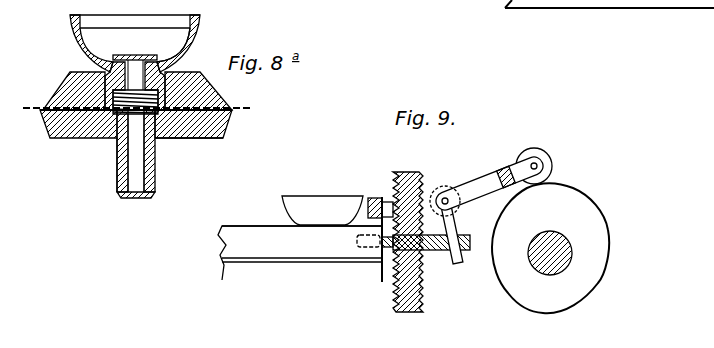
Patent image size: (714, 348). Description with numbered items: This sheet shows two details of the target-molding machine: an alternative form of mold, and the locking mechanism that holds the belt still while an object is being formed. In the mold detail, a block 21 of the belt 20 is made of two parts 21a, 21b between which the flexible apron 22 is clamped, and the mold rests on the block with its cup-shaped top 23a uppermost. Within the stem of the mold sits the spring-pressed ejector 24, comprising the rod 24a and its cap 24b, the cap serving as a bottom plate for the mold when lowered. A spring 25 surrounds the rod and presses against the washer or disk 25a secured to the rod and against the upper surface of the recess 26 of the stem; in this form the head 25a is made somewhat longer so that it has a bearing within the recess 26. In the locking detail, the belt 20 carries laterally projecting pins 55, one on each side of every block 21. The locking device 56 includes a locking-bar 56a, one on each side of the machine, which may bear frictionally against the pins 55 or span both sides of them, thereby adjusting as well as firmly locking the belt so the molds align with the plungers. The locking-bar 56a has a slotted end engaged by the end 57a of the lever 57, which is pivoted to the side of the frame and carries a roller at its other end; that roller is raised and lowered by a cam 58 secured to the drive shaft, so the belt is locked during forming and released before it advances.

In FIG. 9, the belt 20 is at (277, 253).
In FIG. 8A, the block 21 is at (127, 140).
In FIG. 8A, the block part 21a is at (223, 140).
In FIG. 8A, the block part 21b is at (213, 101).
In FIG. 8A, the endless flexible apron 22 is at (247, 112).
In FIG. 9, the endless flexible apron 22 is at (253, 229).
In FIG. 8A, the cup-shaped top 23a is at (83, 27).
In FIG. 9, the cup-shaped top 23a is at (322, 198).
In FIG. 8A, the spring-pressed ejector 24 is at (135, 144).
In FIG. 8A, the rod 24a is at (180, 63).
In FIG. 8A, the cap 24b is at (134, 56).
In FIG. 8A, the spring 25 is at (73, 75).
In FIG. 8A, the washer or disk 25a is at (117, 176).
In FIG. 8A, the recess 26 is at (160, 128).
In FIG. 9, the laterally projecting pins 55 is at (382, 243).
In FIG. 9, the locking device 56 is at (390, 242).
In FIG. 9, the locking-bar 56a is at (458, 248).
In FIG. 9, the lever 57 is at (491, 222).
In FIG. 9, the lever end 57a is at (458, 207).
In FIG. 9, the cam 58 is at (550, 248).